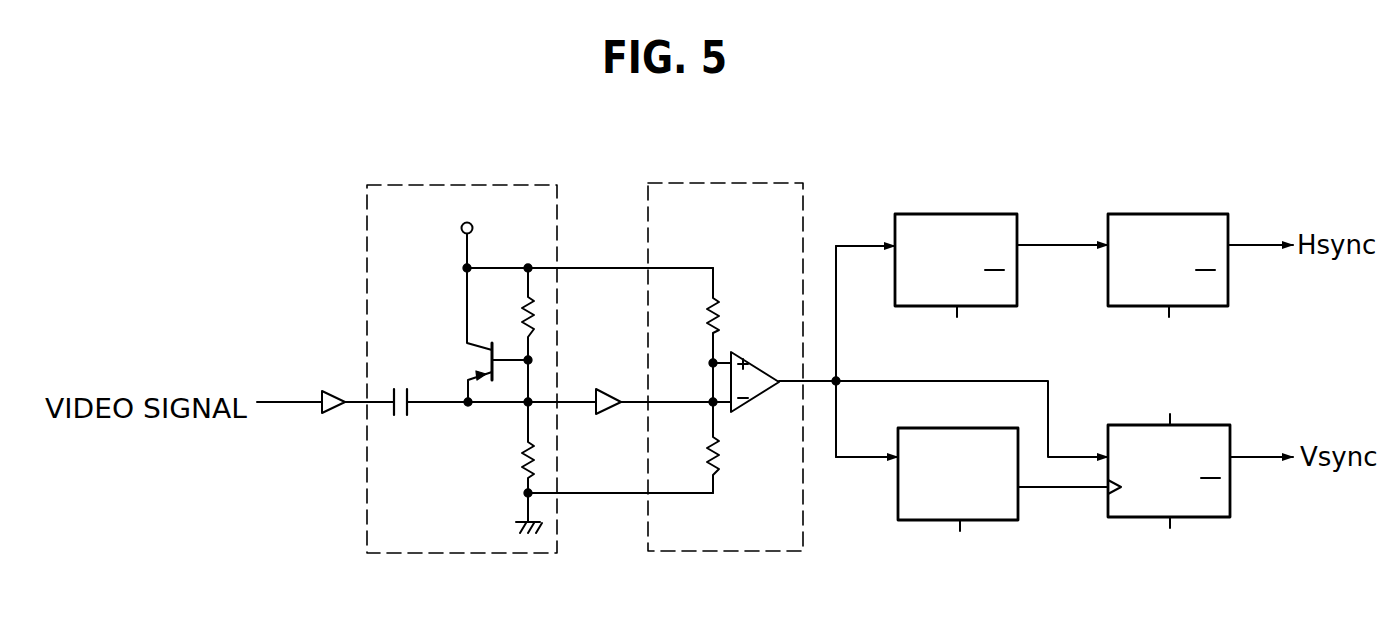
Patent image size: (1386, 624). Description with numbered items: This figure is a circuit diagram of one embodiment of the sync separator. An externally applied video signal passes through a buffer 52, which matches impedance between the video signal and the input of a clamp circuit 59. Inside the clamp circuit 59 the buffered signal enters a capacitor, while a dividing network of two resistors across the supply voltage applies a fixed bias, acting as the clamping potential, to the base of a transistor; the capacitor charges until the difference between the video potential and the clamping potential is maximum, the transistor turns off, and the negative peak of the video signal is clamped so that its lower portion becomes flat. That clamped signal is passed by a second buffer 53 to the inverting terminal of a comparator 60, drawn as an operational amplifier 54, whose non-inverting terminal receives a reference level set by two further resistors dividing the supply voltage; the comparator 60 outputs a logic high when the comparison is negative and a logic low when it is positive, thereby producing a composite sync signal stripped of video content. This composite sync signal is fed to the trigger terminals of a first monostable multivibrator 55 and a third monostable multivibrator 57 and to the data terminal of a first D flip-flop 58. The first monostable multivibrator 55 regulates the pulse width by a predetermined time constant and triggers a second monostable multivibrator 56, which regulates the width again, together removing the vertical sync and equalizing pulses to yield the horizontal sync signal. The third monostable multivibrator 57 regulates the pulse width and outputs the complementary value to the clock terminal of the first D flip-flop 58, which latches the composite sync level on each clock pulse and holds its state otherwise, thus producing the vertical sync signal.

The buffer 52 is at (330, 392).
The buffer 53 is at (604, 389).
The comparator 54 is at (768, 390).
The first monostable multivibrator 55 is at (1007, 306).
The second monostable multivibrator 56 is at (1216, 306).
The third monostable multivibrator 57 is at (993, 520).
The first D flip-flop 58 is at (1206, 517).
The clamp circuit 59 is at (430, 553).
The comparator 60 is at (725, 396).